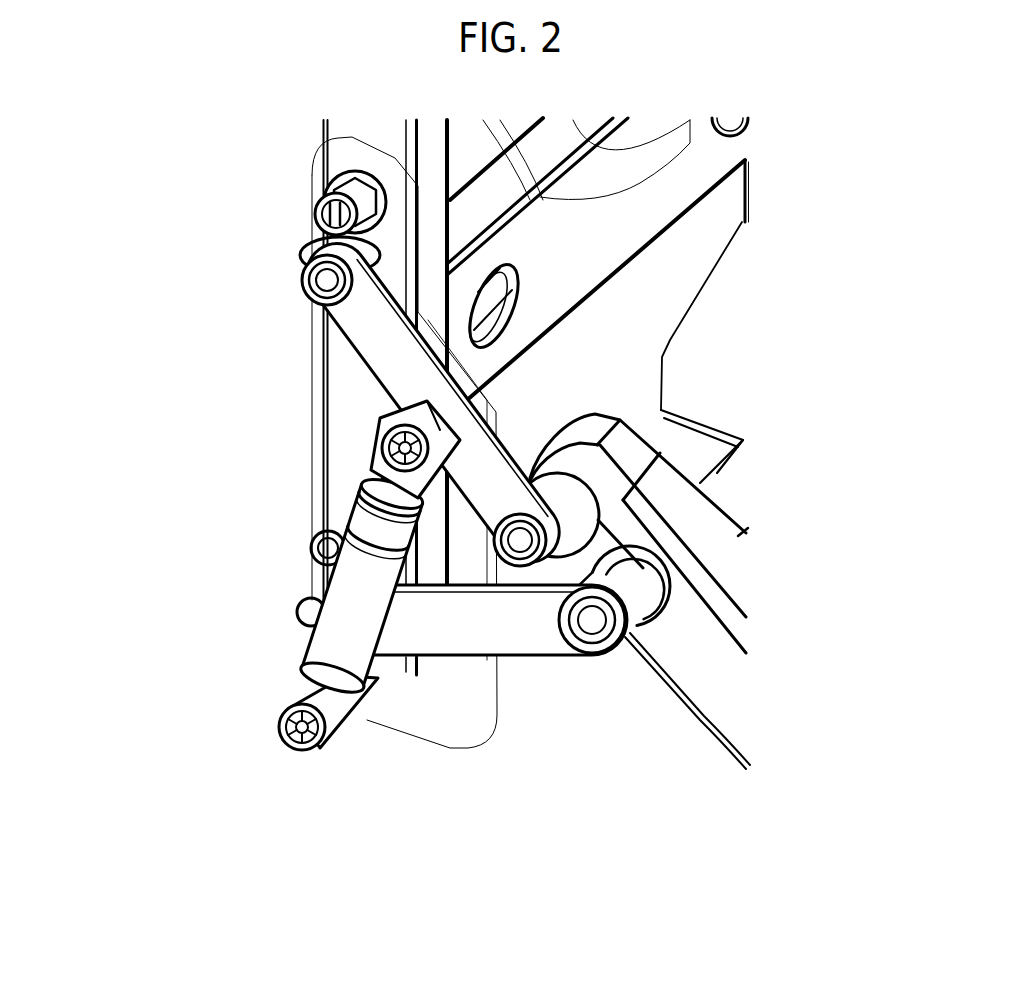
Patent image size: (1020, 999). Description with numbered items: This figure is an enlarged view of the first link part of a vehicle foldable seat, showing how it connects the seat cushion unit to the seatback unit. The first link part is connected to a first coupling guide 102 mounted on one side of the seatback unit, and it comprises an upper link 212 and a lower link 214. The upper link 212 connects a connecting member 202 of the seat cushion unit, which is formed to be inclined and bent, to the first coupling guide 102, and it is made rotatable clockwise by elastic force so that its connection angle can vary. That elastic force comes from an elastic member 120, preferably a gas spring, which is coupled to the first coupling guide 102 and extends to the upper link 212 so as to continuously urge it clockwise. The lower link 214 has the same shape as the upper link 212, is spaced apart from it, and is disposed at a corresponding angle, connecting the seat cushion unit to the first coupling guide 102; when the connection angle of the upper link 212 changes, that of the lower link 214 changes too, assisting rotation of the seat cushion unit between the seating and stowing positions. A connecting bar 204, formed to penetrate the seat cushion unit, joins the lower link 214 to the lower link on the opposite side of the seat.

The first coupling guide 102 is at (350, 432).
The elastic member 120 is at (343, 605).
The connecting member 202 is at (677, 667).
The connecting bar 204 is at (717, 473).
The upper link 212 is at (362, 333).
The lower link 214 is at (460, 633).